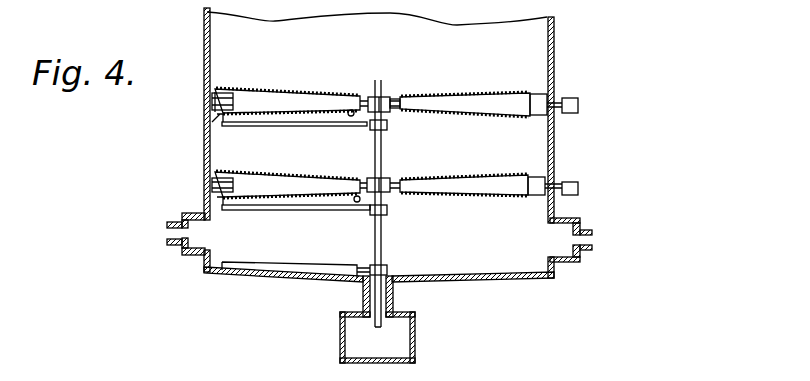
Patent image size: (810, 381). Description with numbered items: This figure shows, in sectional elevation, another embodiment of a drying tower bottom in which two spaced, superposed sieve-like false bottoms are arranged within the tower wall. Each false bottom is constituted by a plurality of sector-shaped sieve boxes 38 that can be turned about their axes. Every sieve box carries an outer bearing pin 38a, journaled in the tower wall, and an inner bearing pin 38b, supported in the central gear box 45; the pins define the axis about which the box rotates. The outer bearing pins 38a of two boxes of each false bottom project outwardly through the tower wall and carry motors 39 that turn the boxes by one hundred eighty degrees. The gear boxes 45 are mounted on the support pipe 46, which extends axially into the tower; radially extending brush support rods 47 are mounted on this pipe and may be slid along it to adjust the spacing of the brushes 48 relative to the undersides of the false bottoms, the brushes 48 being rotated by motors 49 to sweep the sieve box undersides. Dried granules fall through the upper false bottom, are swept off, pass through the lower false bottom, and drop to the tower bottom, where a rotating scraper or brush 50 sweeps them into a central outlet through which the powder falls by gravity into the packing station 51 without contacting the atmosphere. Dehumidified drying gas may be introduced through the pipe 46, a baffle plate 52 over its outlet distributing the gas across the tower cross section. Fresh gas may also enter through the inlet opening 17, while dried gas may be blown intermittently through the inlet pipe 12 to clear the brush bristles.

The inlet pipe 12 is at (192, 212).
The inlet opening 17 is at (582, 225).
The sieve box 38 is at (505, 100).
The outer bearing pin 38a is at (557, 113).
The inner bearing pin 38b is at (398, 110).
The motor 39 is at (579, 104).
The gear box 45 is at (392, 99).
The support pipe 46 is at (384, 143).
The brush support rod 47 is at (254, 126).
The brush 48 is at (222, 118).
The motor 49 is at (355, 203).
The rotating scraper or brush 50 is at (257, 267).
The packing station 51 is at (340, 338).
The baffle plate 52 is at (381, 90).